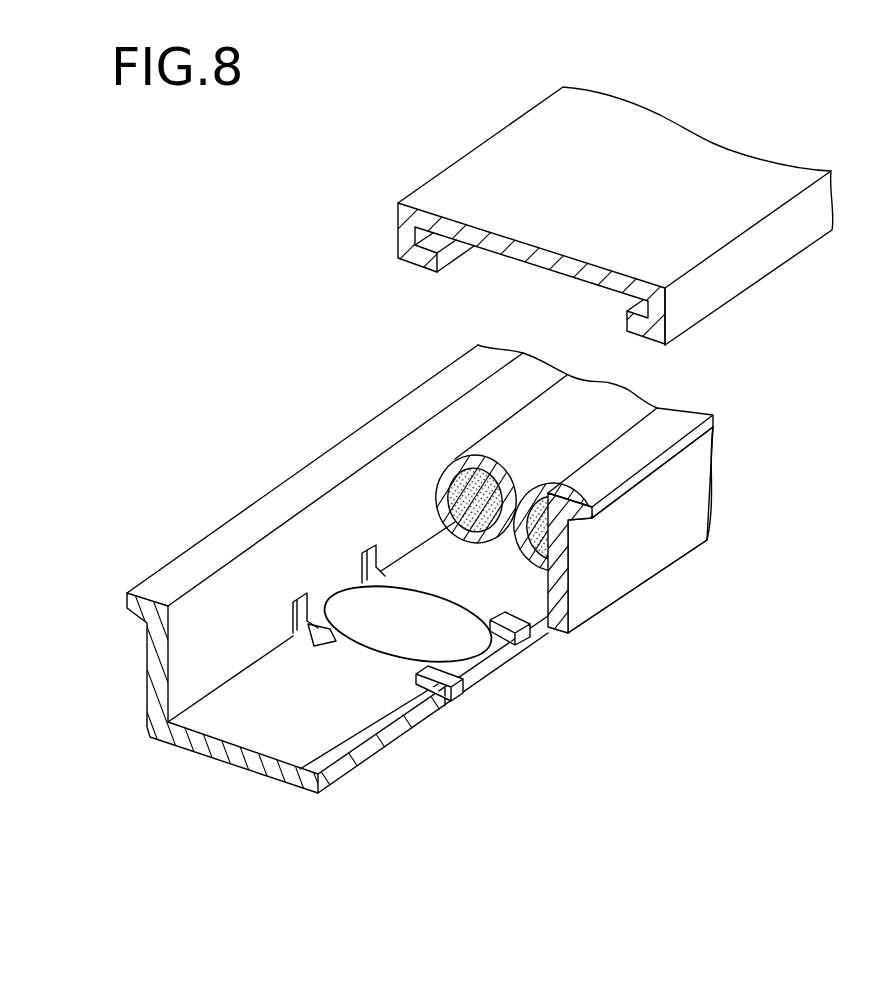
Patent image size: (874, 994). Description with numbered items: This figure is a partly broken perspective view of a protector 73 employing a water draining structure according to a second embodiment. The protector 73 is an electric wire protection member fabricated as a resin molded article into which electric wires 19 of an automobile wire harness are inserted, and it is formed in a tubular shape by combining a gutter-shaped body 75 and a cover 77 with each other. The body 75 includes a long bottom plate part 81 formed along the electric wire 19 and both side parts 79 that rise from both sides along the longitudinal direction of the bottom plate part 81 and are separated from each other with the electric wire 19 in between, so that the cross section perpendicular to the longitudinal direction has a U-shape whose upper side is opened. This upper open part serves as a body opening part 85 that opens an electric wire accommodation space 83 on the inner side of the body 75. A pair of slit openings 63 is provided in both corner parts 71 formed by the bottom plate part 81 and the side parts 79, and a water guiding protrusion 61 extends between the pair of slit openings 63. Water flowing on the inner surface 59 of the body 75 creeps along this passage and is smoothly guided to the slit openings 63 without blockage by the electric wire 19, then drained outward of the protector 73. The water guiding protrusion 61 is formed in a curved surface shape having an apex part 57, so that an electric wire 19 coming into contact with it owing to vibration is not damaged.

The electric wire 19 is at (627, 397).
The apex part 57 is at (447, 610).
The inner surface 59 is at (310, 637).
The water guiding protrusion 61 is at (364, 668).
The slit opening 63 is at (375, 545).
The corner part 71 is at (222, 692).
The protector 73 is at (267, 238).
The body 75 is at (253, 478).
The cover 77 is at (383, 242).
The side part 79 is at (148, 655).
The bottom plate part 81 is at (310, 748).
The electric wire accommodation space 83 is at (286, 563).
The body opening part 85 is at (322, 510).